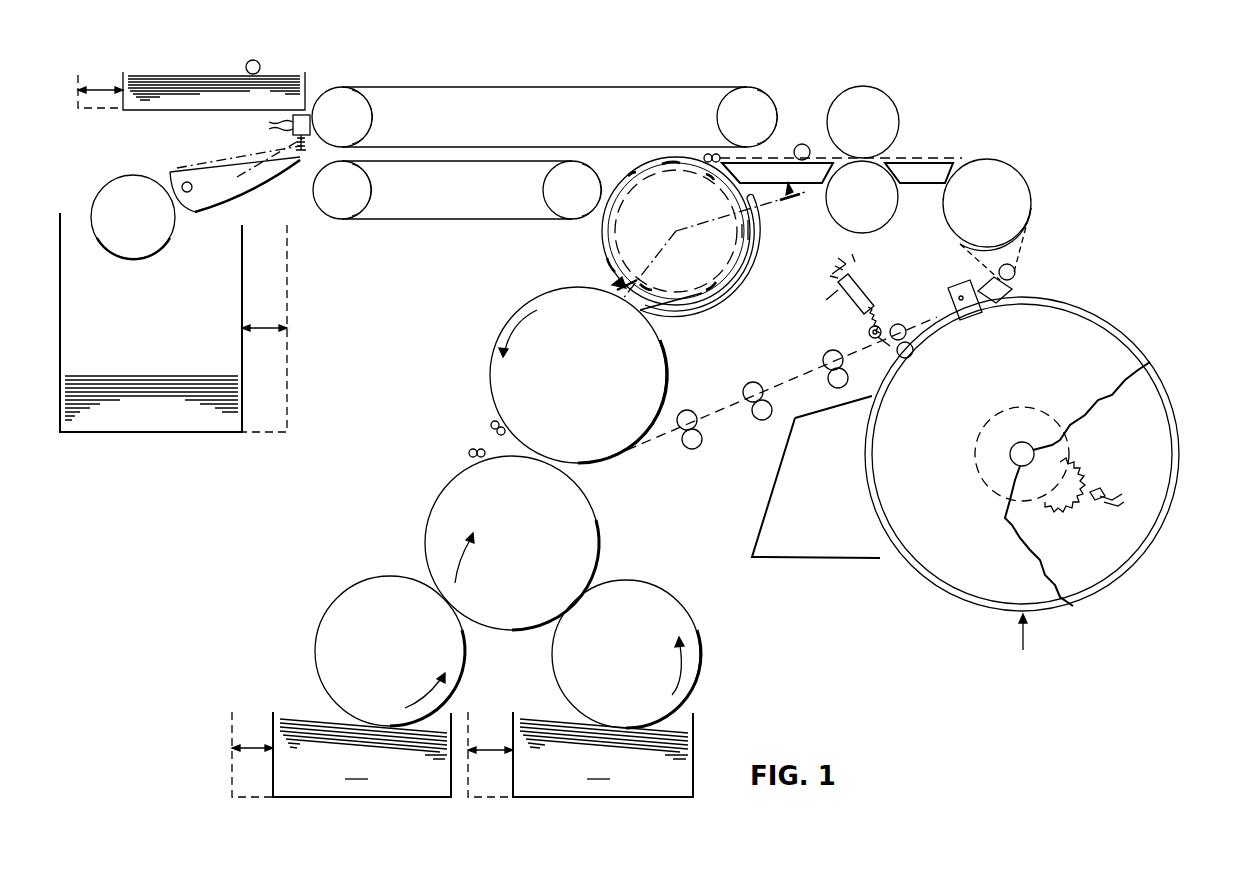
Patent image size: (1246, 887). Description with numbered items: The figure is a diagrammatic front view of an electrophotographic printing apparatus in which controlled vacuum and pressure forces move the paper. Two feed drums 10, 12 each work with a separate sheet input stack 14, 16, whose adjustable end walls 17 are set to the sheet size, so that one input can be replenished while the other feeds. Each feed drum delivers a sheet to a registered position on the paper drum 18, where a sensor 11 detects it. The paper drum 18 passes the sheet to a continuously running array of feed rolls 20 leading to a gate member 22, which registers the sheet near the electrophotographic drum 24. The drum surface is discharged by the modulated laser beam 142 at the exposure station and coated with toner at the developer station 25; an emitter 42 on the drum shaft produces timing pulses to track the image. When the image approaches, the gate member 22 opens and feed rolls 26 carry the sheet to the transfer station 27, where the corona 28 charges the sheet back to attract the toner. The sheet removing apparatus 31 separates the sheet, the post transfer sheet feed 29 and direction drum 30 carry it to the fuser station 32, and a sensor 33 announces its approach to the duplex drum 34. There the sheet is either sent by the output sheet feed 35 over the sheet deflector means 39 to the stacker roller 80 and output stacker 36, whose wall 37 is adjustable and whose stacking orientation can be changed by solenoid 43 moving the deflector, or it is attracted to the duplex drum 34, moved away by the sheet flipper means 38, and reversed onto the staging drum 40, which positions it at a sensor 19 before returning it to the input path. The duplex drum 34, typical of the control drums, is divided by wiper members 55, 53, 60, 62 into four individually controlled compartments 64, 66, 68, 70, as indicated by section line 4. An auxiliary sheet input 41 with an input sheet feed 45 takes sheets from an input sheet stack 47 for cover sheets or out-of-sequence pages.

The section line 4 is at (708, 246).
The feed drum 10 is at (462, 658).
The sensor 11 is at (471, 450).
The feed drum 12 is at (698, 634).
The sheet input stack 14 is at (362, 754).
The sheet input stack 16 is at (603, 754).
The adjustable end walls 17 is at (272, 724).
The paper drum 18 is at (583, 510).
The sensor 19 is at (492, 422).
The feed rolls 20 is at (701, 446).
The gate member 22 is at (868, 332).
The electrophotographic drum 24 is at (1080, 310).
The developer station 25 is at (800, 455).
The feed rolls 26 is at (900, 324).
The transfer station 27 is at (961, 317).
The corona 28 is at (958, 286).
The post transfer sheet feed 29 is at (1032, 243).
The direction drum 30 is at (1030, 197).
The sheet removing apparatus 31 is at (1002, 296).
The fuser station 32 is at (898, 119).
The sensor 33 is at (708, 154).
The duplex drum 34 is at (600, 240).
The output sheet feed 35 is at (428, 221).
The output stacker 36 is at (155, 417).
The wall 37 is at (243, 310).
The sheet flipper means 38 is at (752, 272).
The sheet deflector means 39 is at (192, 172).
The staging drum 40 is at (490, 372).
The auxiliary sheet input 41 is at (626, 89).
The emitter 42 is at (1082, 458).
The solenoid 43 is at (305, 112).
The input sheet feed 45 is at (253, 59).
The input sheet stack 47 is at (226, 74).
The wiper member 53 is at (630, 177).
The wiper member 55 is at (710, 176).
The wiper member 60 is at (650, 292).
The wiper member 62 is at (708, 290).
The compartment 64 is at (670, 160).
The compartment 66 is at (608, 262).
The compartment 68 is at (682, 300).
The compartment 70 is at (750, 231).
The stacker roller 80 is at (112, 185).
The laser beam 142 is at (1023, 640).